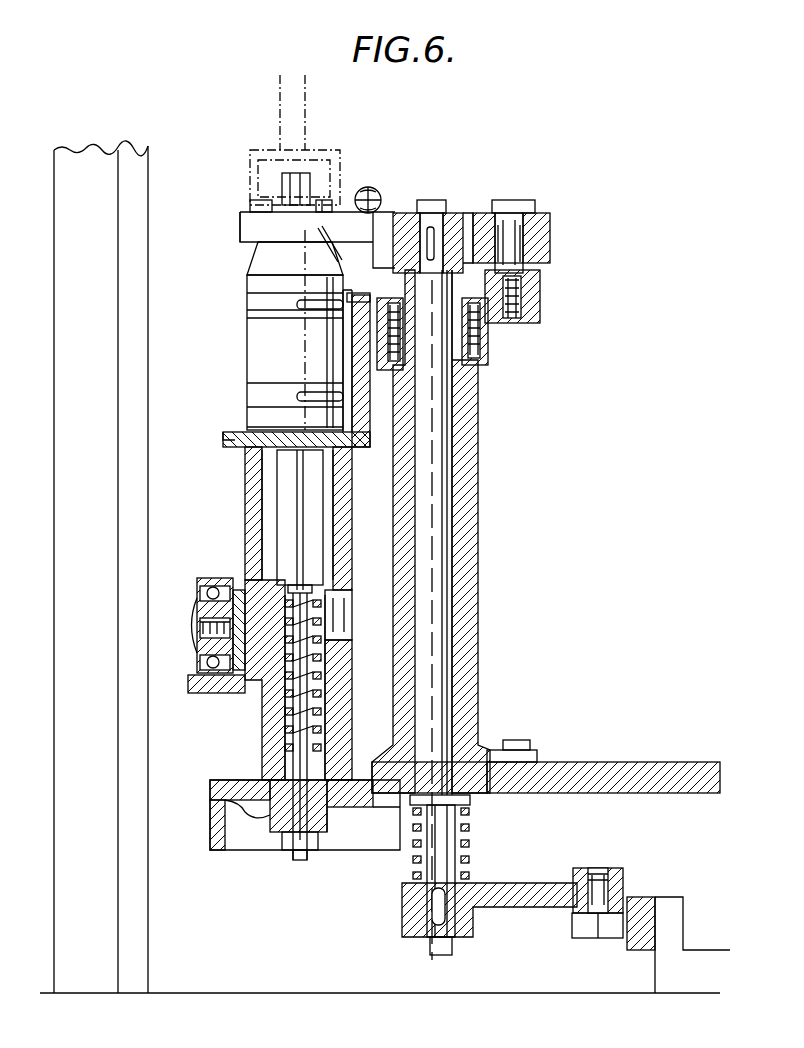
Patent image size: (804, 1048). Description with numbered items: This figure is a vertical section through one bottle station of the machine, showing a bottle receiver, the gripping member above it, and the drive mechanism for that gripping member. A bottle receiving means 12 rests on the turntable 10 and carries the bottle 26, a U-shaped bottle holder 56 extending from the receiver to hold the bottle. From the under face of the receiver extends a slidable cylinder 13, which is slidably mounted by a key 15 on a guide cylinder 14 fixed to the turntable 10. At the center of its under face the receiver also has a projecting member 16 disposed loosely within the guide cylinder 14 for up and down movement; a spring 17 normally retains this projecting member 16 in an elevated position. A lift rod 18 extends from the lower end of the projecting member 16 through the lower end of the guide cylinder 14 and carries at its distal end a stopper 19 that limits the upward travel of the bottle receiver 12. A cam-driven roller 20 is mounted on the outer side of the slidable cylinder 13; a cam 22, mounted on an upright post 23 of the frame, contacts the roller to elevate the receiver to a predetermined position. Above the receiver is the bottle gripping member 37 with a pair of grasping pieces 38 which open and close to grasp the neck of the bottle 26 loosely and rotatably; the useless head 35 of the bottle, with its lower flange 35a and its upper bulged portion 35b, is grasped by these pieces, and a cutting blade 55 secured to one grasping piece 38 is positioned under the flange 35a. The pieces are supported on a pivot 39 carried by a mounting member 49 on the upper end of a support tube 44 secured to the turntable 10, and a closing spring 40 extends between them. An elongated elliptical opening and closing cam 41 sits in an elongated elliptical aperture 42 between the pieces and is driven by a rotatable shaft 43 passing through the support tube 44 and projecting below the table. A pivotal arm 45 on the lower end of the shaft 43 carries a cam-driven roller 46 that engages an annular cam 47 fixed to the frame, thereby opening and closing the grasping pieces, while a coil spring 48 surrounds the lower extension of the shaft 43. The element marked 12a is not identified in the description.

The turntable 10 is at (631, 762).
The bottle receiving means 12 is at (236, 432).
The bracket 12a is at (366, 418).
The slidable cylinder 13 is at (250, 500).
The guide cylinder 14 is at (276, 714).
The key 15 is at (341, 598).
The projecting member 16 is at (306, 472).
The spring 17 is at (284, 738).
The lift rod 18 is at (300, 712).
The stopper 19 is at (300, 843).
The cam-driven roller 20 is at (215, 592).
The cam 22 is at (204, 693).
The upright post 23 is at (79, 165).
The bottle 26 is at (262, 338).
The useless head 35 is at (313, 170).
The flange 35a is at (266, 205).
The bulged portion 35b is at (284, 178).
The bottle gripping member 37 is at (465, 170).
The grasping piece 38 is at (344, 218).
The pivot 39 is at (516, 254).
The closing spring 40 is at (399, 201).
The opening and closing cam 41 is at (475, 213).
The elongated elliptical aperture 42 is at (498, 205).
The rotatable shaft 43 is at (432, 482).
The support tube 44 is at (462, 446).
The pivotal arm 45 is at (500, 885).
The cam-driven roller 46 is at (590, 930).
The annular cam 47 is at (626, 950).
The coil spring 48 is at (470, 818).
The mounting member 49 is at (530, 298).
The cutting blade 55 is at (305, 243).
The bottle holder 56 is at (316, 392).